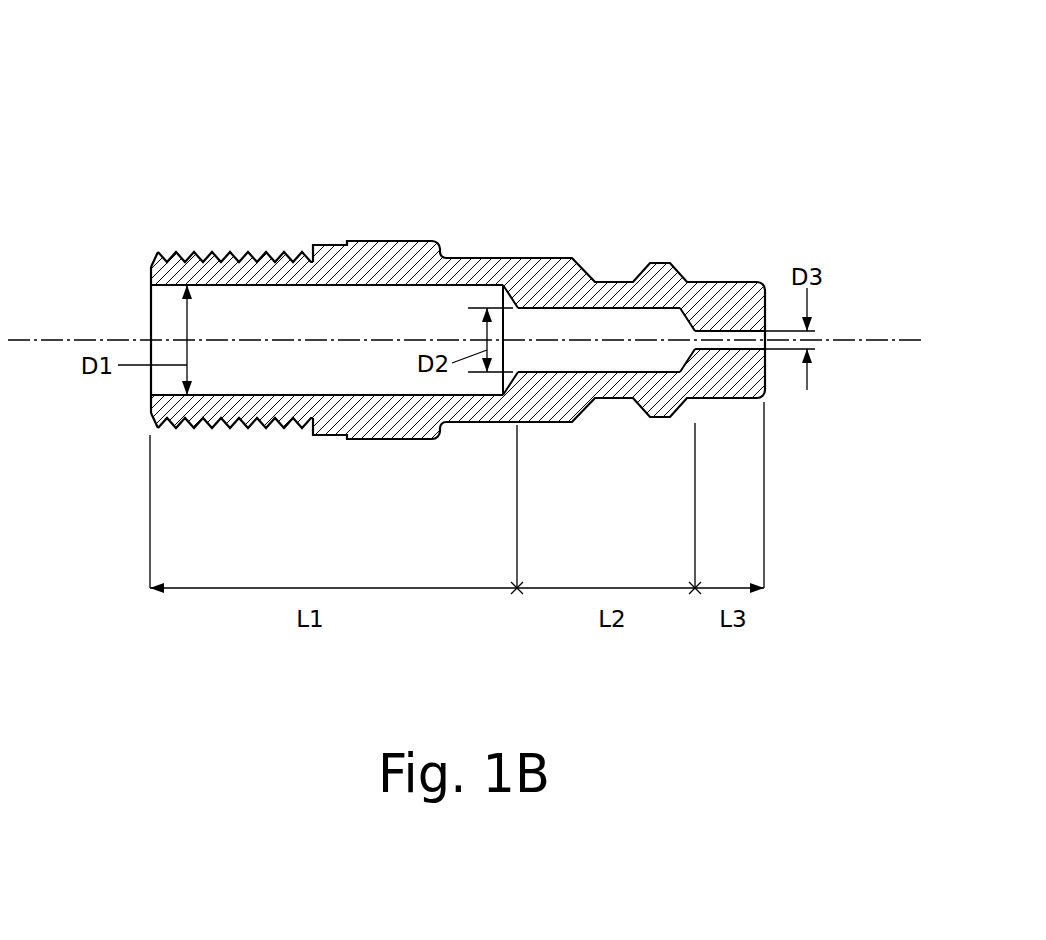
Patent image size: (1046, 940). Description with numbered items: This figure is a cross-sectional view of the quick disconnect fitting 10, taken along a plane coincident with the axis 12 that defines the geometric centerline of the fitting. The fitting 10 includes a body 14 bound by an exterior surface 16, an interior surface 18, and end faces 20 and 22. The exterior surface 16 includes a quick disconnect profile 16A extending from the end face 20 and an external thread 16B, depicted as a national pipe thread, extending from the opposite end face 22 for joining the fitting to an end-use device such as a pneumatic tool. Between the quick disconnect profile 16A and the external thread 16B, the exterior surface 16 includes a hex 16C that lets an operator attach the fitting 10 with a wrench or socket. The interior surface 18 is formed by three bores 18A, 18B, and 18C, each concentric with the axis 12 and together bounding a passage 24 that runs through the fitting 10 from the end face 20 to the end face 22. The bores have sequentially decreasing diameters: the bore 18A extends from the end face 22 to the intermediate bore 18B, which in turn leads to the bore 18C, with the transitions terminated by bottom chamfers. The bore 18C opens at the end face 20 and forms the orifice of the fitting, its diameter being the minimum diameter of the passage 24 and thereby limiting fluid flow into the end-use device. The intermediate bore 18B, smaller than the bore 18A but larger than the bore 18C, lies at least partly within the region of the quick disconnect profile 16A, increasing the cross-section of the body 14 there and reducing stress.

The fitting 10 is at (838, 97).
The axis 12 is at (33, 340).
The body 14 is at (588, 170).
The exterior surface 16 is at (478, 257).
The quick disconnect profile 16A is at (765, 222).
The external thread 16B is at (343, 222).
The hex 16C is at (428, 222).
The interior surface 18 is at (489, 343).
The bore 18A is at (298, 287).
The bore 18B is at (598, 308).
The bore 18C is at (722, 347).
The end face 20 is at (766, 382).
The end face 22 is at (150, 265).
The passage 24 is at (413, 324).